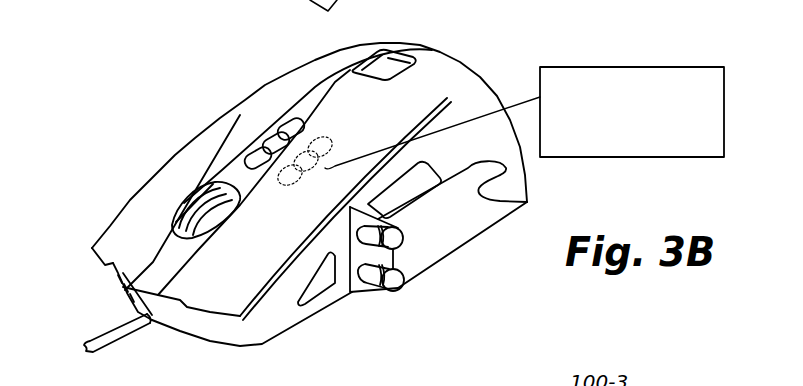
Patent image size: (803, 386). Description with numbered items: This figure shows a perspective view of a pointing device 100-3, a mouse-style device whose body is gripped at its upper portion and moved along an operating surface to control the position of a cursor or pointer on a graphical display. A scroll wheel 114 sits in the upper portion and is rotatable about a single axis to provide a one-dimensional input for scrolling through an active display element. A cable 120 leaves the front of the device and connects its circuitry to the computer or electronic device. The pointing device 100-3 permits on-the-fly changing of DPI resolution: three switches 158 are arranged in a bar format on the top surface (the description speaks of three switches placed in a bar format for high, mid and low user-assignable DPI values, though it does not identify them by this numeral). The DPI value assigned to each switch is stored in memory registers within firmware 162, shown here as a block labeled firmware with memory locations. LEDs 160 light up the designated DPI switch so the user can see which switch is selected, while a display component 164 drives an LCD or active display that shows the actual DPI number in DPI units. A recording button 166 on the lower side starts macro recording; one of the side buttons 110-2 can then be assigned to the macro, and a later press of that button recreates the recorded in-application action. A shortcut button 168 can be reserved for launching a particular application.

The pointing device 100-3 is at (93, 118).
The shortcut button 168 is at (350, 70).
The programmable buttons 158 is at (288, 125).
The scroll wheel 114 is at (186, 204).
The LEDs 160 is at (342, 139).
The firmware 162 is at (620, 67).
The display component 164 is at (528, 202).
The side buttons 110-2 is at (400, 238).
The recording button 166 is at (307, 283).
The cable 120 is at (83, 339).